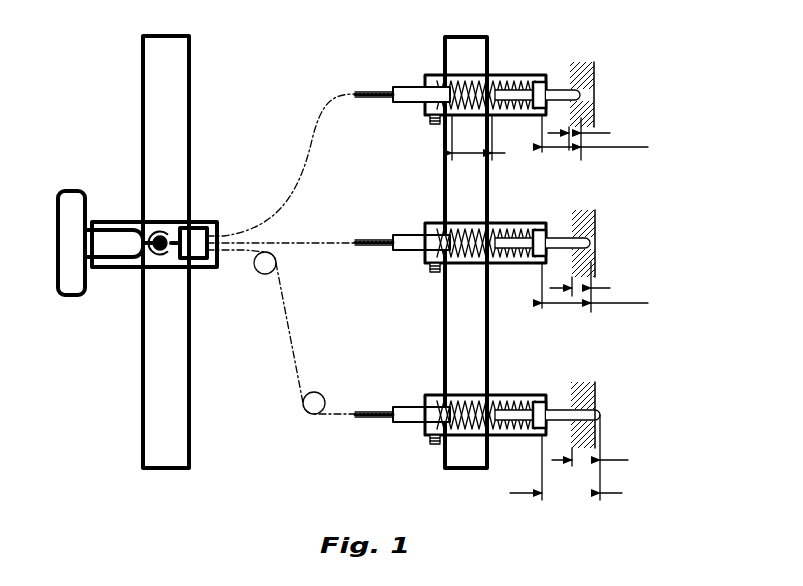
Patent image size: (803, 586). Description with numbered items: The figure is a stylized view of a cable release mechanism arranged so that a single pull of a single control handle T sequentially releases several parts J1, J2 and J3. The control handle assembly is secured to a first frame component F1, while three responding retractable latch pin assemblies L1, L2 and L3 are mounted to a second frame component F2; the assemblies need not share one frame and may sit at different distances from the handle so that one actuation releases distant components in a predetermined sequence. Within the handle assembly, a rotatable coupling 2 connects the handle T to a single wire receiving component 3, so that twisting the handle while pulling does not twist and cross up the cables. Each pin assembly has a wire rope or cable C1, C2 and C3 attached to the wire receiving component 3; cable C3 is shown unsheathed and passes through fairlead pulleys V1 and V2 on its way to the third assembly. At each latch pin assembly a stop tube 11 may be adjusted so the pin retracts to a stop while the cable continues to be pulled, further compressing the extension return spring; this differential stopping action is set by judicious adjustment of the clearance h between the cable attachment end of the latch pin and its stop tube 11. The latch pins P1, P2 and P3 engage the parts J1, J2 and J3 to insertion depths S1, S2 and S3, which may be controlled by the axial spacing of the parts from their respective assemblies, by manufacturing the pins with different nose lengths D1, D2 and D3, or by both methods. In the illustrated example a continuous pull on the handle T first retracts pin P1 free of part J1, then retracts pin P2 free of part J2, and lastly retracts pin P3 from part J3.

The control handle T is at (72, 190).
The rotatable coupling 2 is at (162, 252).
The wire receiving component 3 is at (195, 228).
The first frame component F1 is at (160, 468).
The second frame component F2 is at (466, 468).
The stop tube 11 is at (412, 86).
The first cable C1 is at (310, 130).
The second cable C2 is at (330, 238).
The third cable C3 is at (288, 340).
The fairlead pulley V1 is at (260, 272).
The fairlead pulley V2 is at (322, 400).
The retractable latch pin assembly L1 is at (438, 75).
The retractable latch pin assembly L2 is at (438, 223).
The retractable latch pin assembly L3 is at (438, 395).
The latch pin P1 is at (556, 90).
The latch pin P2 is at (556, 238).
The latch pin P3 is at (558, 410).
The part J1 is at (595, 70).
The part J2 is at (596, 240).
The part J3 is at (596, 392).
The clearance h is at (487, 140).
The insertion depth S1 is at (593, 139).
The insertion depth S2 is at (594, 287).
The insertion depth S3 is at (604, 457).
The nose length D1 is at (611, 137).
The nose length D2 is at (611, 289).
The nose length D3 is at (566, 470).